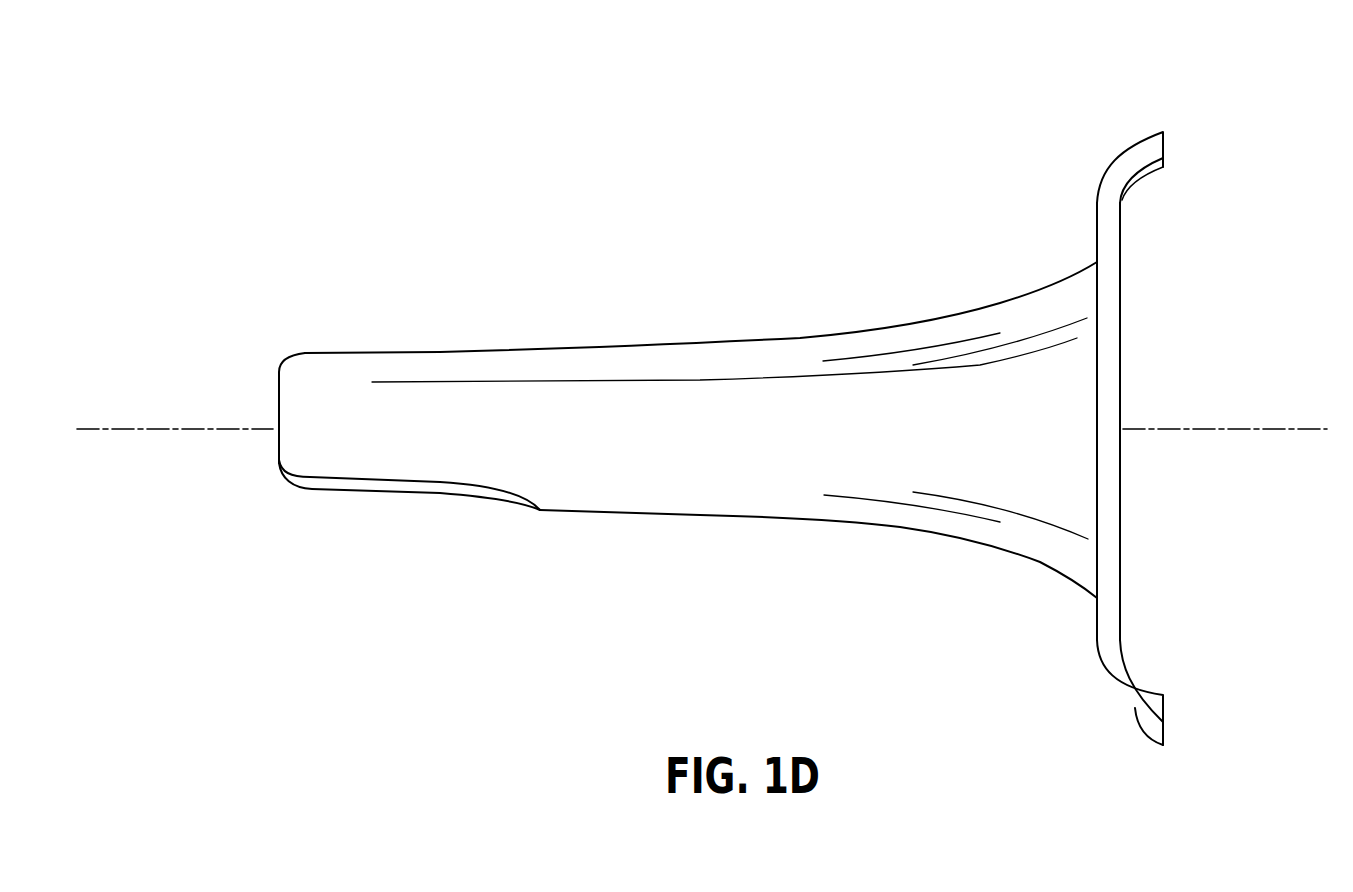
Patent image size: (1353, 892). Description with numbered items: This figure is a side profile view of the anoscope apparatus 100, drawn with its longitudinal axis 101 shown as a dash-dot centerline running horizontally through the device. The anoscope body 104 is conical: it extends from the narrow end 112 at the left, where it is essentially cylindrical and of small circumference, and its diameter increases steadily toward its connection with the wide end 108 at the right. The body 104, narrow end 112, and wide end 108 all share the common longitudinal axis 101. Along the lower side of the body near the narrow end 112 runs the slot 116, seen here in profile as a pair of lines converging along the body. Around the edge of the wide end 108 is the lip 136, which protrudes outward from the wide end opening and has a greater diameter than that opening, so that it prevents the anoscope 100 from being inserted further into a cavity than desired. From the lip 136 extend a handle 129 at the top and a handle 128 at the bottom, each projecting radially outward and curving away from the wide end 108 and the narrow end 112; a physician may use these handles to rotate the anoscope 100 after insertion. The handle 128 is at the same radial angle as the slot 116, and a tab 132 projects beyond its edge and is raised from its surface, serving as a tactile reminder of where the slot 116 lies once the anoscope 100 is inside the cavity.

The anoscope apparatus 100 is at (260, 127).
The longitudinal axis 101 is at (1242, 432).
The anoscope body 104 is at (727, 352).
The wide end 108 is at (963, 330).
The narrow end 112 is at (298, 375).
The slot 116 is at (363, 490).
The handle 128 is at (1140, 690).
The handle 129 is at (1130, 148).
The tab 132 is at (1142, 735).
The lip 136 is at (1108, 317).